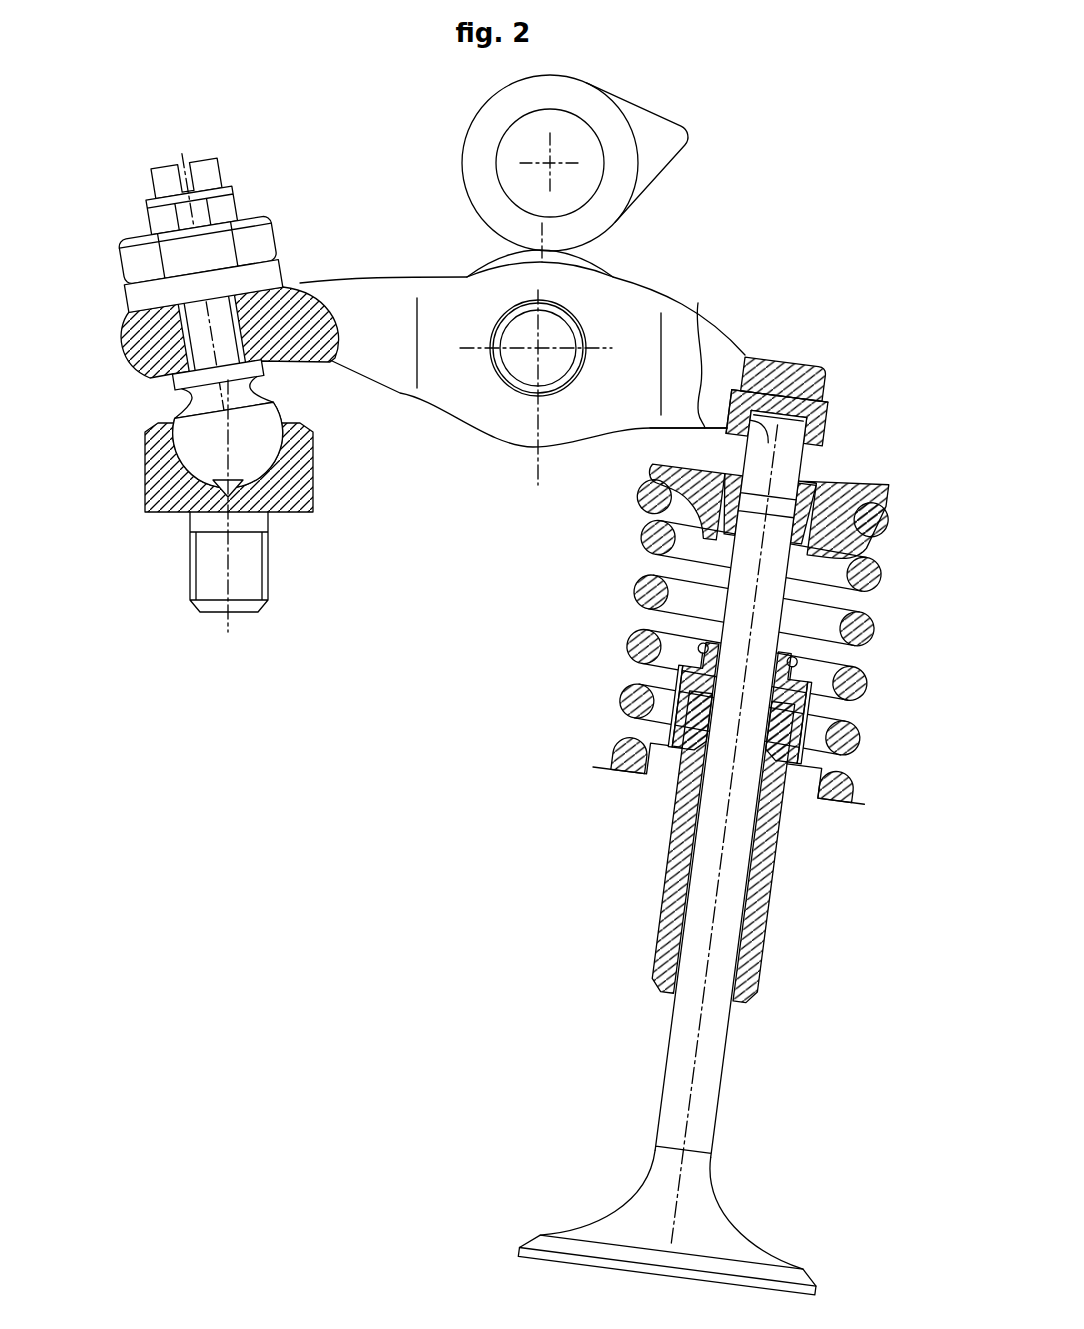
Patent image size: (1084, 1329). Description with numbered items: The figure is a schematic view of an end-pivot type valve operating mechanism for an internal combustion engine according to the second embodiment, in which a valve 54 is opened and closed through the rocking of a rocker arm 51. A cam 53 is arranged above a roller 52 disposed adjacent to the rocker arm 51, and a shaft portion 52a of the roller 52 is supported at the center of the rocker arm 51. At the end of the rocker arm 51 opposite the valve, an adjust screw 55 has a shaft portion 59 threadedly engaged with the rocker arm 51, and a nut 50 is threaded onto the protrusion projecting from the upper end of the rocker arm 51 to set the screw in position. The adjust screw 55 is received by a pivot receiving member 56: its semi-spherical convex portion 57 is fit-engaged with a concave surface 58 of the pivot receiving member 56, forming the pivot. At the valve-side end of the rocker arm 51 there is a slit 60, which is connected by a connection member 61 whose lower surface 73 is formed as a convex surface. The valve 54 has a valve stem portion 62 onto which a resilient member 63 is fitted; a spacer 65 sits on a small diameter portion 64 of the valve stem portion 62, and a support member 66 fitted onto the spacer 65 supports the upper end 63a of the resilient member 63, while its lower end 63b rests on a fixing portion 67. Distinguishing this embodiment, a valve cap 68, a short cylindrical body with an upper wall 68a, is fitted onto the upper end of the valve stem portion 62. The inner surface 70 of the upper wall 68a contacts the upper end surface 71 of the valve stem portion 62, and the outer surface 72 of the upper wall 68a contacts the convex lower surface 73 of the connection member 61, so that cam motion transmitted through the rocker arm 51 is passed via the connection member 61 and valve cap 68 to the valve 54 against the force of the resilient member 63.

The nut 50 is at (265, 236).
The rocker arm 51 is at (670, 287).
The roller 52 is at (505, 262).
The shaft portion 52a is at (518, 370).
The cam 53 is at (665, 133).
The valve 54 is at (647, 1056).
The adjust screw 55 is at (187, 450).
The pivot receiving member 56 is at (295, 512).
The semi-spherical convex portion 57 is at (273, 417).
The concave surface 58 is at (165, 512).
The shaft portion 59 is at (203, 352).
The slit 60 is at (718, 348).
The connection member 61 is at (815, 372).
The valve stem portion 62 is at (692, 921).
The resilient member 63 is at (866, 719).
The upper end 63a is at (655, 496).
The lower end 63b is at (850, 782).
The small diameter portion 64 is at (785, 497).
The spacer 65 is at (740, 492).
The support member 66 is at (850, 500).
The fixing portion 67 is at (615, 750).
The valve cap 68 is at (843, 431).
The upper wall 68a is at (787, 400).
The inner surface 70 is at (745, 435).
The upper end surface 71 is at (812, 400).
The outer surface 72 is at (750, 390).
The lower surface 73 is at (742, 398).